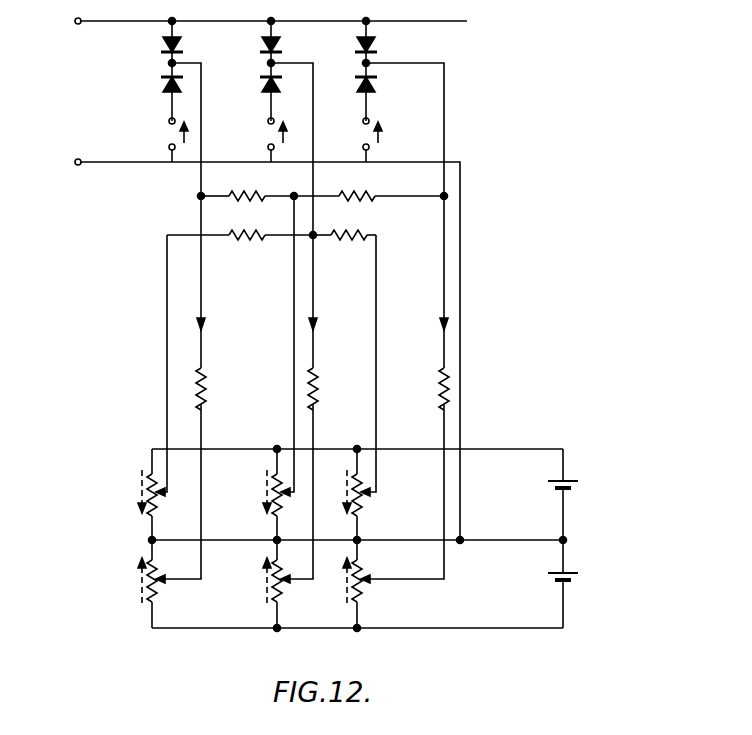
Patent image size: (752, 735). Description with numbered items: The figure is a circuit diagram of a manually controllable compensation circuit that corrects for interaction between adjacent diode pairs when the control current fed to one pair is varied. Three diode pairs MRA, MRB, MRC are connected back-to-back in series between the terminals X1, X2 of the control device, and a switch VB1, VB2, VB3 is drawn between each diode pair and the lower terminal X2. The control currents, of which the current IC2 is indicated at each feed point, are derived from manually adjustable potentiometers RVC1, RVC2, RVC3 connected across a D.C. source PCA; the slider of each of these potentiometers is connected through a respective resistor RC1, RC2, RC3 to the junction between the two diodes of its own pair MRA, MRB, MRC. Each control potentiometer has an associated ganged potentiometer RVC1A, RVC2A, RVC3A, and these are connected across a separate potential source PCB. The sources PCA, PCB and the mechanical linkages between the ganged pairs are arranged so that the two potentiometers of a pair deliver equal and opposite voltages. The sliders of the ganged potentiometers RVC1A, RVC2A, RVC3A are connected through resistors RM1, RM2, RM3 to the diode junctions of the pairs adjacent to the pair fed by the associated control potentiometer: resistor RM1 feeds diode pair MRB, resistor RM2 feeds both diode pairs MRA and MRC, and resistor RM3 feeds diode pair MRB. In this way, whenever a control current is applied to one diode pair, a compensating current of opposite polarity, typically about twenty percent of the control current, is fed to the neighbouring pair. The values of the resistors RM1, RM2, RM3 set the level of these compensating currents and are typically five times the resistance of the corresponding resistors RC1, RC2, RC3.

The terminal X1 is at (259, 23).
The terminal X2 is at (255, 347).
The diode pair MRA is at (183, 58).
The diode pair MRB is at (282, 58).
The diode pair MRC is at (377, 58).
The switch VB1 is at (167, 135).
The switch VB2 is at (266, 135).
The switch VB3 is at (361, 135).
The resistor RM1 is at (246, 241).
The resistor RM2 is at (257, 201).
The resistor RM3 is at (348, 242).
The control current IC2 is at (203, 302).
The resistor RC1 is at (209, 391).
The resistor RC2 is at (320, 392).
The resistor RC3 is at (437, 389).
The ganged potentiometer RVC1A is at (147, 516).
The ganged potentiometer RVC2A is at (273, 516).
The ganged potentiometer RVC3A is at (352, 508).
The manually adjustable potentiometer RVC1 is at (148, 604).
The manually adjustable potentiometer RVC2 is at (272, 604).
The manually adjustable potentiometer RVC3 is at (352, 604).
The potential source PCB is at (577, 488).
The D.C. source PCA is at (577, 580).